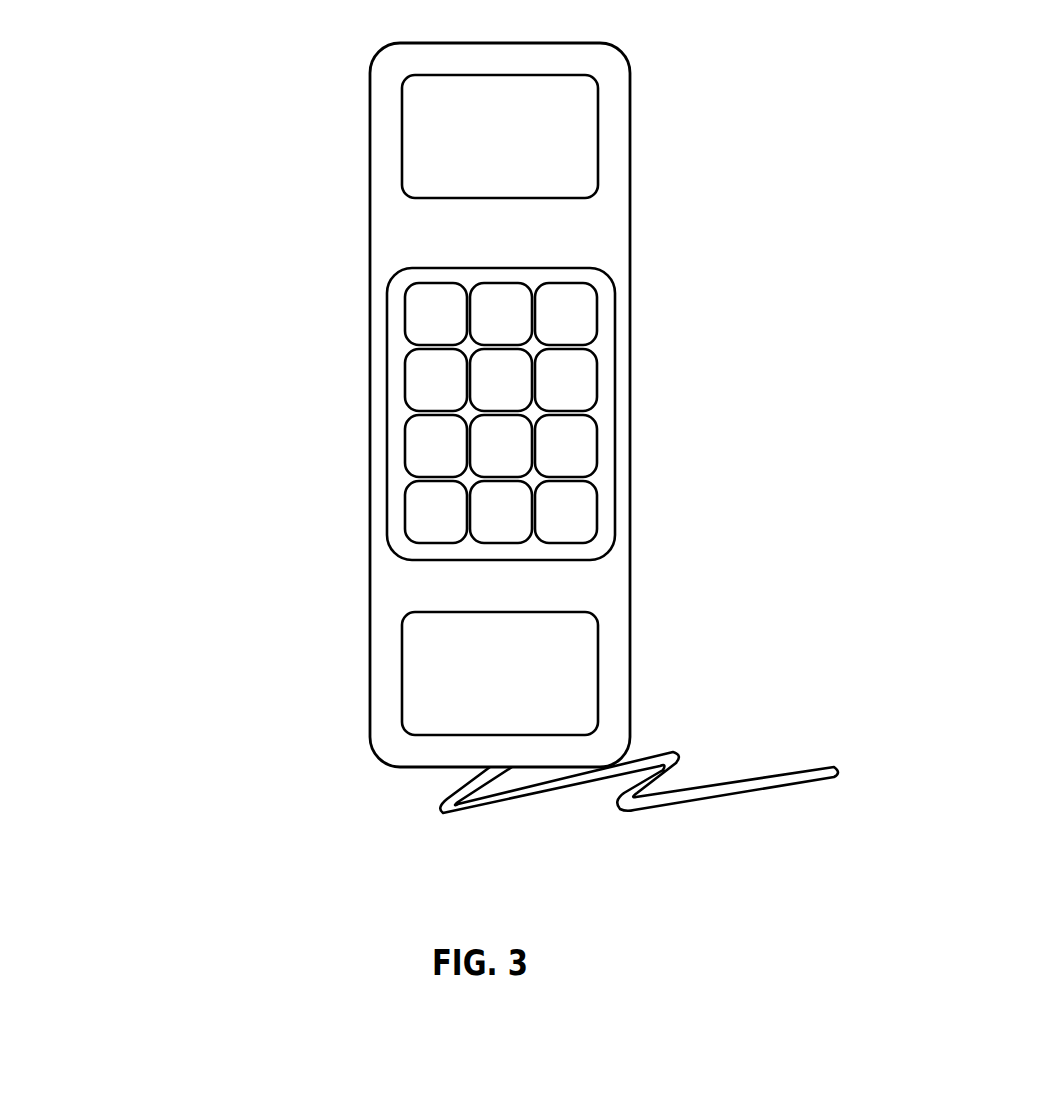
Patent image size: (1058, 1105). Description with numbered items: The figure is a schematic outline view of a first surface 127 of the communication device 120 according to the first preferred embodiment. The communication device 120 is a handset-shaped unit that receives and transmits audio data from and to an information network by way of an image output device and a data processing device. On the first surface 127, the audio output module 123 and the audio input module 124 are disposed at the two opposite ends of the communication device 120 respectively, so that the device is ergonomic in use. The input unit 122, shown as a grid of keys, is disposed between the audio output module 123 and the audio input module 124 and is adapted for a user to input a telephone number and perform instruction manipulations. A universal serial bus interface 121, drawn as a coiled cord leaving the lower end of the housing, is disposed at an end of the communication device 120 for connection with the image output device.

The communication device 120 is at (631, 230).
The universal serial bus (USB) interface 121 is at (734, 777).
The input unit 122 is at (615, 415).
The audio output module 123 is at (602, 137).
The audio input module 124 is at (402, 672).
The first surface 127 is at (400, 238).